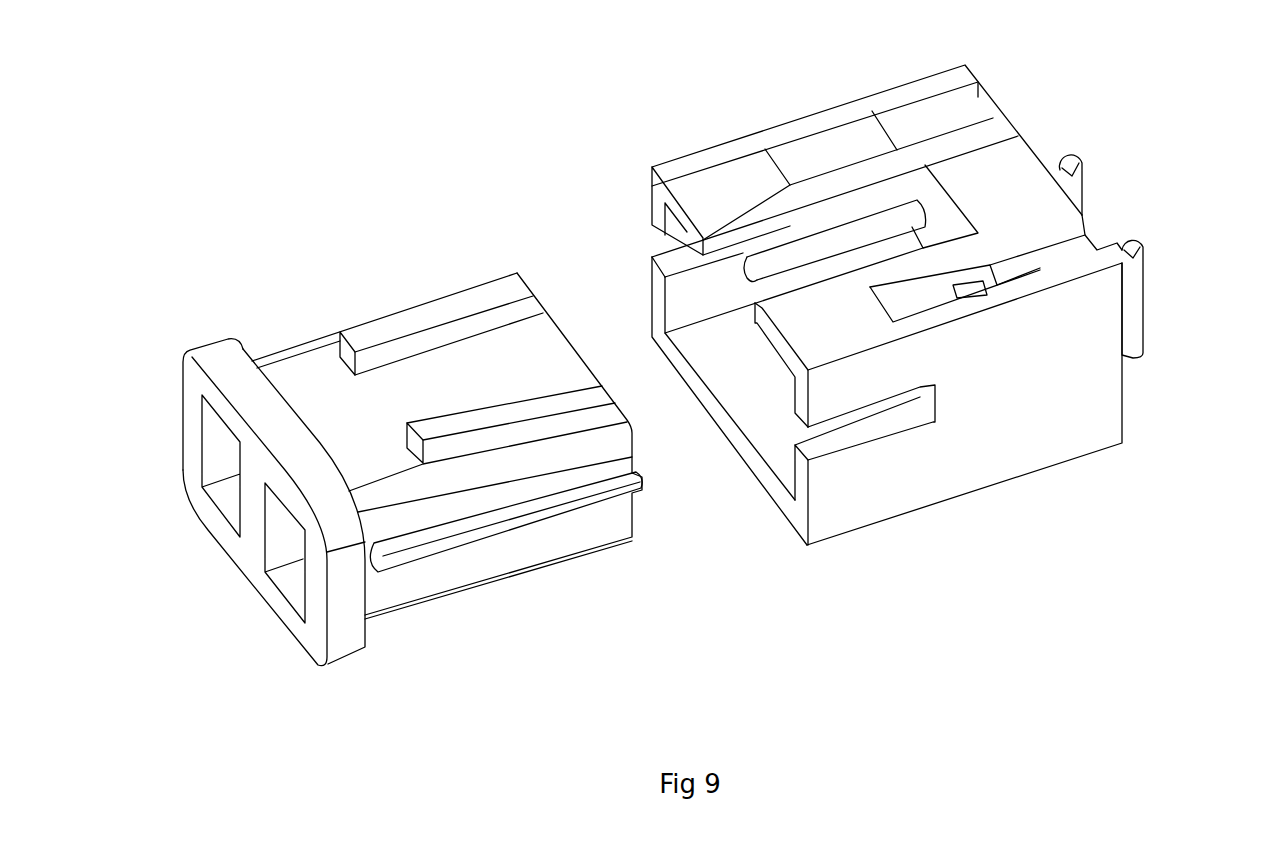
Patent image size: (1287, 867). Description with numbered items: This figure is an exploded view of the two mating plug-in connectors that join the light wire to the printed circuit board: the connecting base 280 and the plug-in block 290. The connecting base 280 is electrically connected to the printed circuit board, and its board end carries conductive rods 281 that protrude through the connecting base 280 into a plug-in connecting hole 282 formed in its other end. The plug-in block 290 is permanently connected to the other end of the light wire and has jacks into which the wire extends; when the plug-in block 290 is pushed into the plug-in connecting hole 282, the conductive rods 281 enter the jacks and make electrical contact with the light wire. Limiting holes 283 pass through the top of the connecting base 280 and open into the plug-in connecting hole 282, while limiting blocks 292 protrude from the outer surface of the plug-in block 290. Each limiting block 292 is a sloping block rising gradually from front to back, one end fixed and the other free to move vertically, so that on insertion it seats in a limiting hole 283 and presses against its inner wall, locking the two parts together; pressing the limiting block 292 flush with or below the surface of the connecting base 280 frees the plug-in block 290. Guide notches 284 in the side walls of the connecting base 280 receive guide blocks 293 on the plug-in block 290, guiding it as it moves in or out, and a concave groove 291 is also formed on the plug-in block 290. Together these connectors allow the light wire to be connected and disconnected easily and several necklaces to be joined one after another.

The connecting base 280 is at (1005, 435).
The conductive rod 281 is at (1135, 290).
The plug-in connecting hole 282 is at (750, 405).
The limiting hole 283 is at (798, 162).
The guide notch 284 is at (863, 432).
The plug-in block 290 is at (315, 633).
The concave groove 291 is at (385, 338).
The limiting block 292 is at (370, 337).
The guide block 293 is at (470, 523).